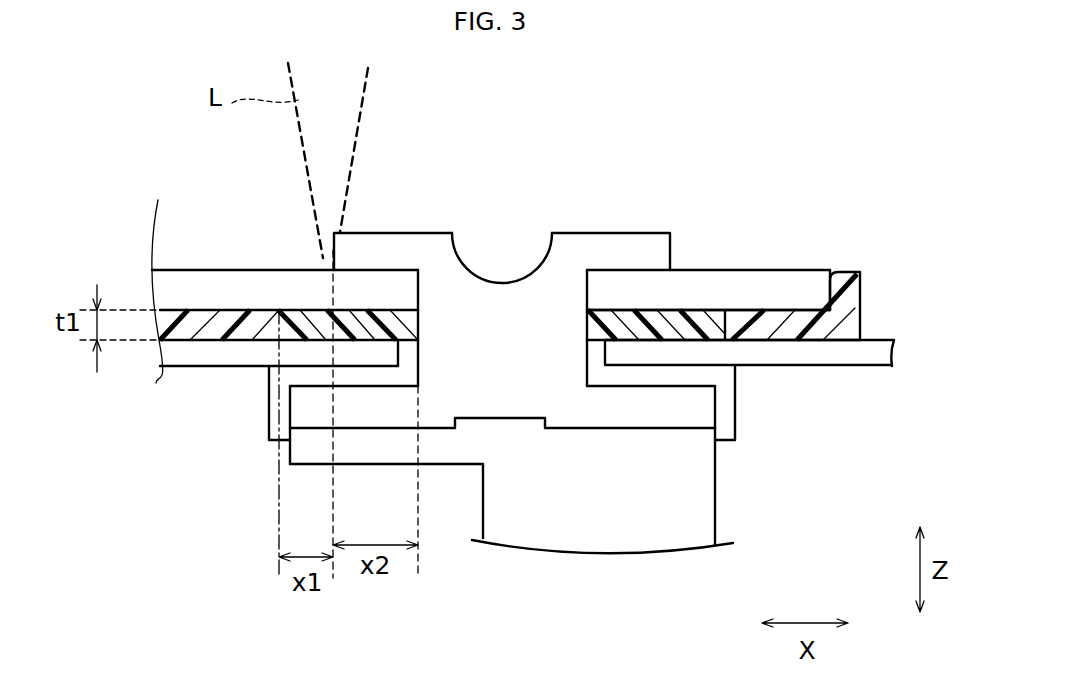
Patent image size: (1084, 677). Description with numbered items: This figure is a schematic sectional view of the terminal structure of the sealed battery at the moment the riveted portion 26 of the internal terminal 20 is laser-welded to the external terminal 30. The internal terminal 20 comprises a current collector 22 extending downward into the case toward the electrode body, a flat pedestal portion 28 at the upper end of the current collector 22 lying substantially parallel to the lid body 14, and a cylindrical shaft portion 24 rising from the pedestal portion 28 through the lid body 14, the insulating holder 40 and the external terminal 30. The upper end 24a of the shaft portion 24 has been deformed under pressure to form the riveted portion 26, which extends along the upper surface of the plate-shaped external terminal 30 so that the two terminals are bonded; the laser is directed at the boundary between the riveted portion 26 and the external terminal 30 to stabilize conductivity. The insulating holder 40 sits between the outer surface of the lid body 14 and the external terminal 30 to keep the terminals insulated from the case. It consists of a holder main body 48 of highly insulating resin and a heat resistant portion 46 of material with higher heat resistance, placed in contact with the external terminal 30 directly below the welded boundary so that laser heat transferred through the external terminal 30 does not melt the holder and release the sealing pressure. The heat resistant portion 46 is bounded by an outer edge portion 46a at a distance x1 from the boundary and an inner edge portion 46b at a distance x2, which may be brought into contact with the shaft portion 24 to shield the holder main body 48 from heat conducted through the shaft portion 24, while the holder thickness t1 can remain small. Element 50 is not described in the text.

The lid body 14 is at (870, 367).
The internal terminal 20 is at (727, 494).
The current collector 22 is at (710, 522).
The shaft portion 24 is at (500, 300).
The upper end of the shaft portion 24a is at (565, 238).
The riveted portion 26 is at (633, 240).
The pedestal portion 28 is at (697, 411).
The external terminal 30 is at (805, 270).
The insulating holder 40 is at (872, 291).
The heat resistant portion 46 is at (317, 312).
The outer edge portion 46a is at (248, 325).
The inner edge portion 46b is at (418, 327).
The holder main body 48 is at (210, 335).
The spacer 50 is at (732, 390).